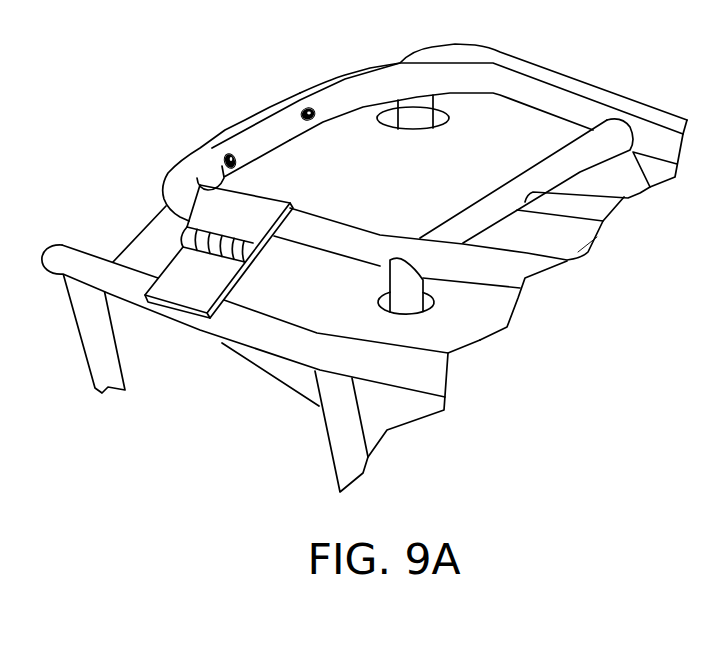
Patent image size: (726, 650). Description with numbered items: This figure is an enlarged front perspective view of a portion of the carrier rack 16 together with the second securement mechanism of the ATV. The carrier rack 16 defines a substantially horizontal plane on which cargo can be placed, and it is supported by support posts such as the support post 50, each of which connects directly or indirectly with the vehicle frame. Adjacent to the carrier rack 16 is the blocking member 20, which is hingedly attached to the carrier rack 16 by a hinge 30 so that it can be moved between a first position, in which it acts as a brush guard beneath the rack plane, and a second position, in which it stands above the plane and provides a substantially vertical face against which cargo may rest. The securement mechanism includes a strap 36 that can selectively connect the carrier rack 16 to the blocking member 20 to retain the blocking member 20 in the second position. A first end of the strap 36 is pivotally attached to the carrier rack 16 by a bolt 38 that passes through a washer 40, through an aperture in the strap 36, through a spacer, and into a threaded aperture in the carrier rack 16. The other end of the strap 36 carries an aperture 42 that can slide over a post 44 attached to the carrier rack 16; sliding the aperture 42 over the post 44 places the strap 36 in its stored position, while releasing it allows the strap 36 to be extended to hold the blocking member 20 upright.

The carrier rack 16 is at (359, 73).
The blocking member 20 is at (259, 343).
The hinge 30 is at (183, 293).
The strap 36 is at (258, 148).
The bolt 38 is at (229, 157).
The washer 40 is at (227, 163).
The aperture 42 is at (310, 110).
The post 44 is at (313, 116).
The support post 50 is at (423, 118).